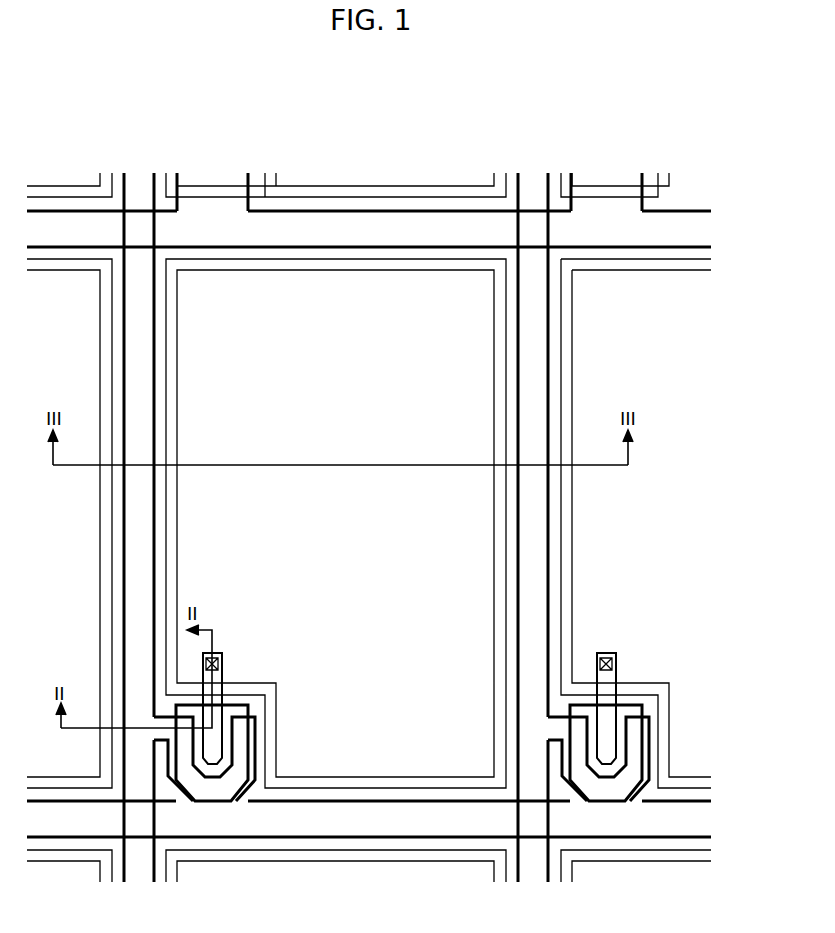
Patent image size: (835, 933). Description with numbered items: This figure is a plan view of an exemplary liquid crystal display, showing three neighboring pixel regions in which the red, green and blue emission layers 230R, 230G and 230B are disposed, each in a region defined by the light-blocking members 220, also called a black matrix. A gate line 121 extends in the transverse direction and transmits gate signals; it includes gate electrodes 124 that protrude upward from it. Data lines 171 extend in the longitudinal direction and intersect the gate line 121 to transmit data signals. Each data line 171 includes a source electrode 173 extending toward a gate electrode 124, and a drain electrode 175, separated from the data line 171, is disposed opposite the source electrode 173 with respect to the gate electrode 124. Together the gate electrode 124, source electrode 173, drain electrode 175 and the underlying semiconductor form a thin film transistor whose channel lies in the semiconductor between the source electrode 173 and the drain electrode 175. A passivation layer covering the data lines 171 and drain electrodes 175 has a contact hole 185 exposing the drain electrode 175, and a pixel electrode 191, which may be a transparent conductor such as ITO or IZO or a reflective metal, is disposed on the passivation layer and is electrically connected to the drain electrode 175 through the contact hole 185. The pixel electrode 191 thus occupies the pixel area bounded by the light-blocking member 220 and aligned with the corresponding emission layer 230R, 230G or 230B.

The gate line 121 is at (400, 802).
The gate electrode 124 is at (250, 796).
The data line 171 is at (154, 633).
The source electrode 173 is at (218, 802).
The drain electrode 175 is at (223, 672).
The contact hole 185 is at (218, 665).
The pixel electrode 191 is at (166, 562).
The light-blocking member 220 is at (177, 522).
The red emission layer 230R is at (82, 369).
The green emission layer 230G is at (372, 369).
The blue emission layer 230B is at (663, 369).